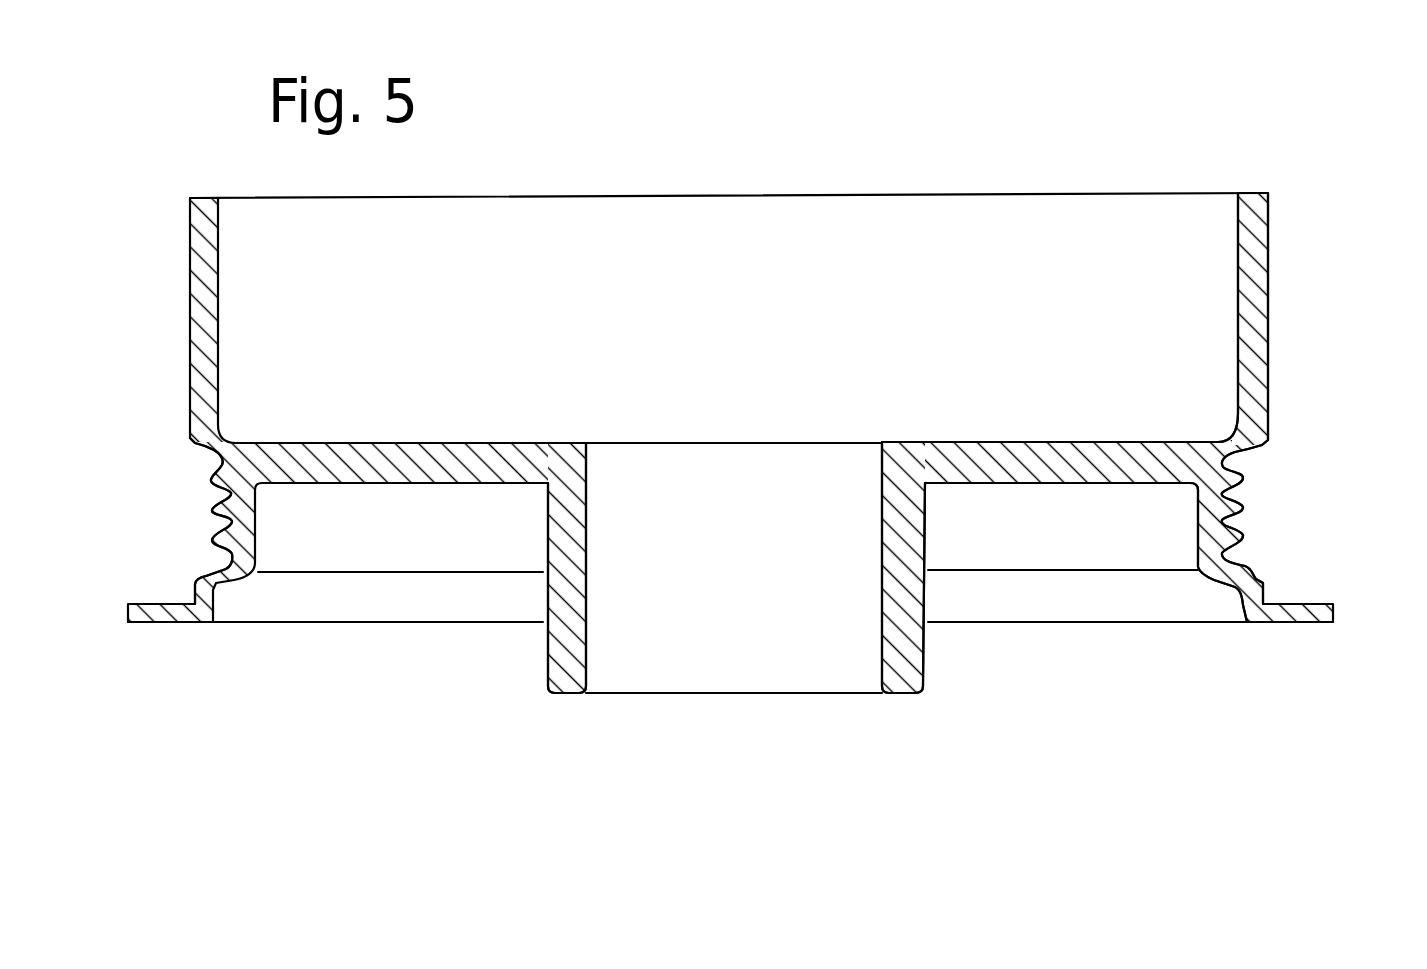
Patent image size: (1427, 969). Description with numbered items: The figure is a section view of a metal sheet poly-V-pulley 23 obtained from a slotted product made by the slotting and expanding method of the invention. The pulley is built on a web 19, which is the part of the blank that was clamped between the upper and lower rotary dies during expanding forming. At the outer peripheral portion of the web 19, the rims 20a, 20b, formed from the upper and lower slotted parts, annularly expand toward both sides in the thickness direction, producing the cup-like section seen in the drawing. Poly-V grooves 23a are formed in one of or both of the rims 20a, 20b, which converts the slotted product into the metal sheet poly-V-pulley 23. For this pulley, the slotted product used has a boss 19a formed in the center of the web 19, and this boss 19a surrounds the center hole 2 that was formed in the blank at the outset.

The center hole 2 is at (707, 458).
The web 19 is at (1048, 440).
The boss 19a is at (920, 652).
The rim 20a is at (1262, 240).
The rim 20b is at (1198, 535).
The metal sheet poly-V-pulley 23 is at (1057, 186).
The poly-V grooves 23a is at (1232, 502).